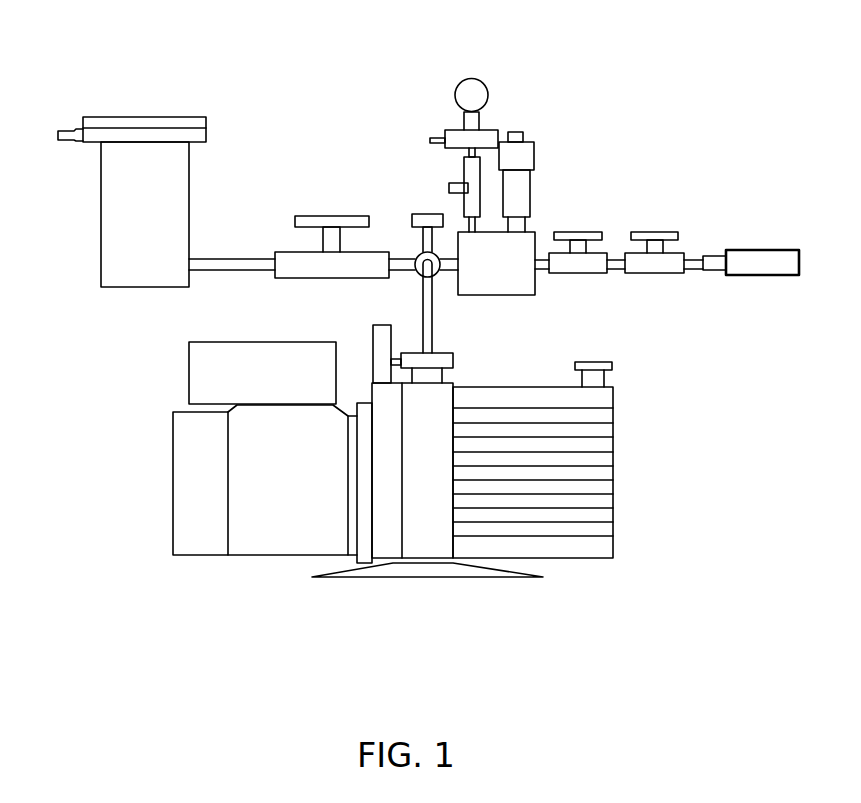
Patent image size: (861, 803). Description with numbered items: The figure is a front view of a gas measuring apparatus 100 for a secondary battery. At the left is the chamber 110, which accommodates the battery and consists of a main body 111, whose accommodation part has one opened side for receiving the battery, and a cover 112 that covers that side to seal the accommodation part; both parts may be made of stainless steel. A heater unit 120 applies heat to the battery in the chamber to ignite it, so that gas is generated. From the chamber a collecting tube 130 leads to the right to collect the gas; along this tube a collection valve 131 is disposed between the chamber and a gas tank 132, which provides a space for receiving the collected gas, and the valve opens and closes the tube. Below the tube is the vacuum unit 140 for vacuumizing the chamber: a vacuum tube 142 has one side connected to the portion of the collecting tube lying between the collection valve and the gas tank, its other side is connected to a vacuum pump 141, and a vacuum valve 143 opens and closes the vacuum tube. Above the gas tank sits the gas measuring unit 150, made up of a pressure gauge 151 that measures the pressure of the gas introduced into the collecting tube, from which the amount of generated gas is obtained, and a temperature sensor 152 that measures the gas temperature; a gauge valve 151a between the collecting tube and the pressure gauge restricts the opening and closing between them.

The gas measuring apparatus 100 is at (693, 36).
The chamber 110 is at (166, 104).
The main body 111 is at (93, 142).
The cover 112 is at (118, 122).
The heater unit 120 is at (120, 243).
The collecting tube 130 is at (230, 248).
The collection valve 131 is at (312, 210).
The gas tank 132 is at (520, 282).
The vacuum unit 140 is at (733, 368).
The vacuum pump 141 is at (624, 520).
The vacuum tube 142 is at (432, 313).
The vacuum valve 143 is at (435, 222).
The gas measuring unit 150 is at (652, 110).
The pressure gauge 151 is at (503, 84).
The gauge valve 151a is at (457, 182).
The temperature sensor 152 is at (545, 152).